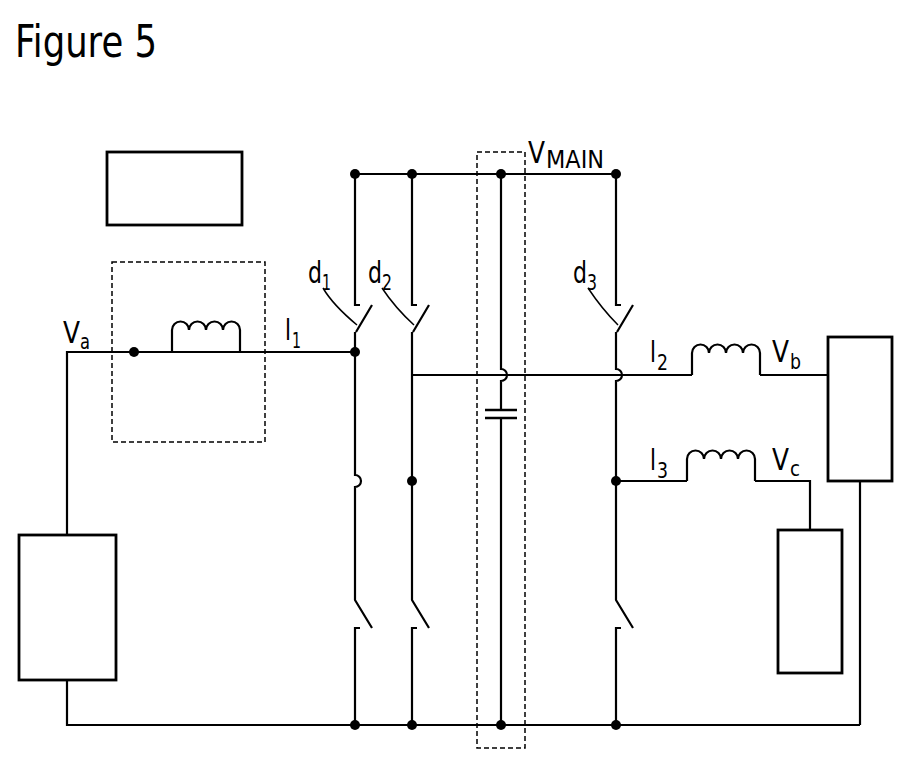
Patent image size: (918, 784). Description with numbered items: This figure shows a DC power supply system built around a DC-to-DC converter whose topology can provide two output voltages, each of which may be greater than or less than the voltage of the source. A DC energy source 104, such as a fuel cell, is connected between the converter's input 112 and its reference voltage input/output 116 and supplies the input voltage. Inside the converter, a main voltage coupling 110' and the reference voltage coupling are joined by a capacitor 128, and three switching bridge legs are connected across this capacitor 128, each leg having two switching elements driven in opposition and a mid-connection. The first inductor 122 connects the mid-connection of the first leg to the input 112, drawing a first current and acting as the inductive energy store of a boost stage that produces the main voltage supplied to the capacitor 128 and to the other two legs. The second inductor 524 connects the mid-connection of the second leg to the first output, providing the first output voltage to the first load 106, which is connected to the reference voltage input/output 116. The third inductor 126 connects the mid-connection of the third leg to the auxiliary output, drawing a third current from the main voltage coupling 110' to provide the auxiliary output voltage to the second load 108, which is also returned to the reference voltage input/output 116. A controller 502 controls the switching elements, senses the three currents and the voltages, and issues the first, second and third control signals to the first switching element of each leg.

The controller 502 is at (165, 190).
The first inductor 122 is at (205, 322).
The input 112 is at (70, 441).
The DC energy source 104 is at (88, 596).
The reference voltage input/output 116 is at (163, 722).
The main voltage coupling 110' is at (486, 411).
The capacitor 128 is at (510, 420).
The second inductor 524 is at (718, 345).
The third inductor 126 is at (728, 452).
The first load 106 is at (882, 388).
The second load 108 is at (832, 583).